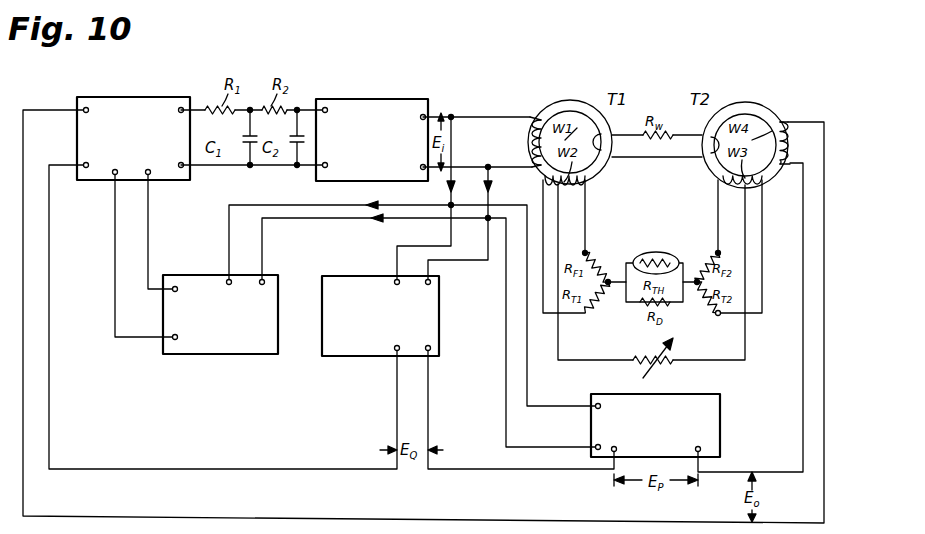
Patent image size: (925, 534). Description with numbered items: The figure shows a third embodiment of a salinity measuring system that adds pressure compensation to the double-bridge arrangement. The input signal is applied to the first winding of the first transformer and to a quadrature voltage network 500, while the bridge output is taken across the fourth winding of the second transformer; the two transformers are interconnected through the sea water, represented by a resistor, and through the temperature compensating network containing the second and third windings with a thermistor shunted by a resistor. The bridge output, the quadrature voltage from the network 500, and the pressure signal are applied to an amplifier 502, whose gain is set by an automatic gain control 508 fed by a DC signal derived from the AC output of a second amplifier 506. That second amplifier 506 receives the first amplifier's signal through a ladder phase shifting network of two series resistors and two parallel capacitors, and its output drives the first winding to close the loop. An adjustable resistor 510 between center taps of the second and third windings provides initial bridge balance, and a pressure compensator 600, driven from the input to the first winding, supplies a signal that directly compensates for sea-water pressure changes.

The quadrature voltage network 500 is at (439, 306).
The amplifier 502 is at (203, 86).
The second amplifier 506 is at (447, 87).
The automatic gain control 508 is at (278, 282).
The adjustable resistor 510 is at (664, 371).
The pressure compensator 600 is at (720, 424).